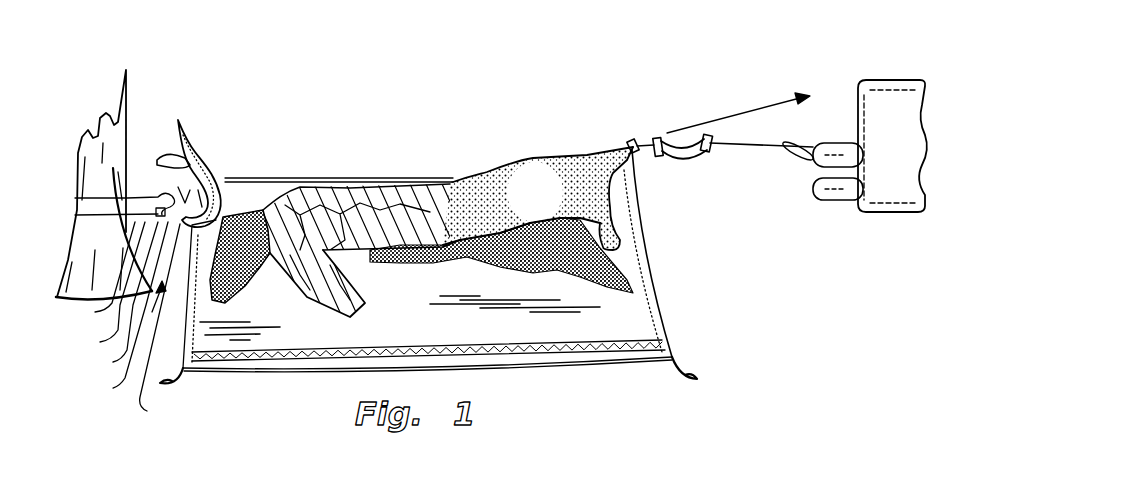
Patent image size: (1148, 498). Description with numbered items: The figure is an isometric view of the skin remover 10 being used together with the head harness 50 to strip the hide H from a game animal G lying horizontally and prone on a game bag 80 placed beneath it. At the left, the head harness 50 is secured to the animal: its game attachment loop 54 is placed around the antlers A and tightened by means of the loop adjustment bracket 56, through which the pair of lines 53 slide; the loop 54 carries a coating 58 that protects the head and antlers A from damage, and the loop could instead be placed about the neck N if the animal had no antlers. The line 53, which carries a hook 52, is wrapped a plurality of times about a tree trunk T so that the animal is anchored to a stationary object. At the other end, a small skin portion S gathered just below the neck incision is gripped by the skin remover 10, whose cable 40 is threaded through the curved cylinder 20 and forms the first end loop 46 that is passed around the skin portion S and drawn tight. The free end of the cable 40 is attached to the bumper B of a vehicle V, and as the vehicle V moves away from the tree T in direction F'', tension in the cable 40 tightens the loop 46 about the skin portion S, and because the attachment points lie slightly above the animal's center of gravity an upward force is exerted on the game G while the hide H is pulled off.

The skin remover apparatus 10 is at (730, 73).
The cylinder 20 is at (680, 162).
The cable 40 is at (753, 145).
The first end loop 46 is at (646, 140).
The head harness 50 is at (126, 309).
The hook 52 is at (166, 192).
The line 53 is at (98, 274).
The game attachment loop 54 is at (122, 296).
The loop adjustment bracket 56 is at (108, 288).
The coating 58 is at (160, 324).
The game bag 80 is at (660, 303).
The antlers A is at (195, 158).
The bumper blocks B is at (840, 145).
The game animal G is at (327, 188).
The hide H is at (527, 170).
The neck N is at (247, 212).
The small skin portion S is at (628, 145).
The tree trunk T is at (118, 142).
The vehicle V is at (873, 80).
The force direction F'' is at (738, 111).